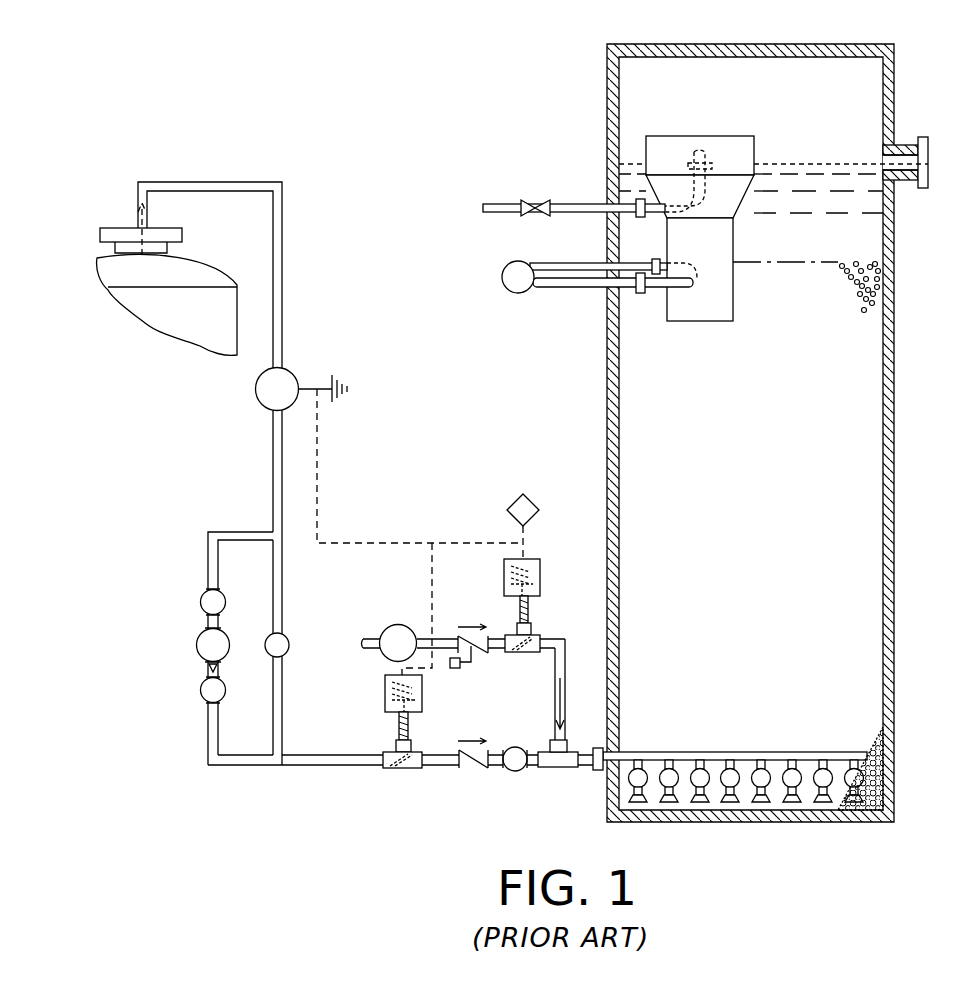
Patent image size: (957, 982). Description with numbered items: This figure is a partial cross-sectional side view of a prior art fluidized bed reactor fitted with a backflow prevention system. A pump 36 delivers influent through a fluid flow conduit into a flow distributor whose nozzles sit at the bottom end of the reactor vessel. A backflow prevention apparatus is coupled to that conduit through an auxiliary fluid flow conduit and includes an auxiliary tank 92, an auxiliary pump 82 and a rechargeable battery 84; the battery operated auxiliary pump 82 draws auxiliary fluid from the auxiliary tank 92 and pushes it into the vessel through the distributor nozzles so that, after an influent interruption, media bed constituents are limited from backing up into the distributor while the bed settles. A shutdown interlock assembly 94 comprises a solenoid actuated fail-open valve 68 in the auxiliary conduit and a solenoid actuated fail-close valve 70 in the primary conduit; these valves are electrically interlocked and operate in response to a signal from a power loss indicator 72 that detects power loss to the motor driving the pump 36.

The pump 36 is at (398, 626).
The solenoid actuated fail-open valve 68 is at (513, 633).
The solenoid actuated fail-close valve 70 is at (407, 773).
The power loss indicator 72 is at (535, 500).
The auxiliary pump 82 is at (256, 390).
The rechargeable battery 84 is at (332, 400).
The auxiliary tank 92 is at (205, 278).
The shutdown interlock assembly 94 is at (459, 541).